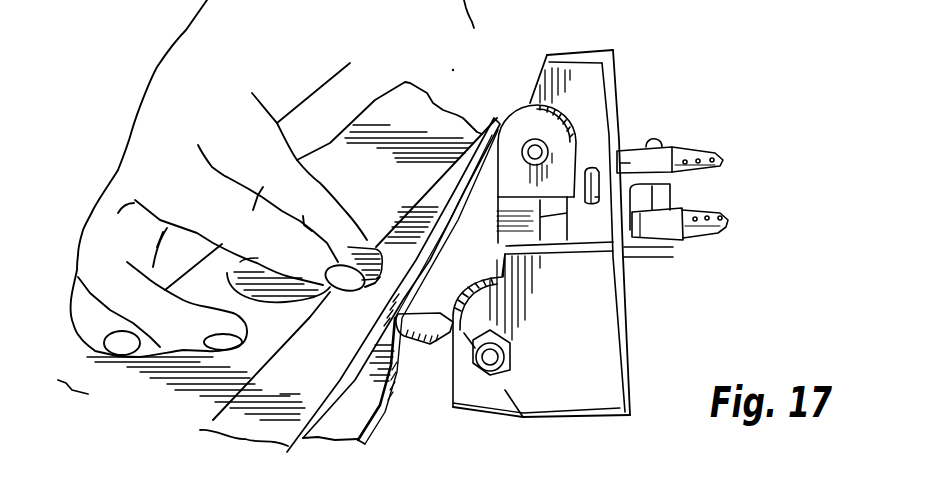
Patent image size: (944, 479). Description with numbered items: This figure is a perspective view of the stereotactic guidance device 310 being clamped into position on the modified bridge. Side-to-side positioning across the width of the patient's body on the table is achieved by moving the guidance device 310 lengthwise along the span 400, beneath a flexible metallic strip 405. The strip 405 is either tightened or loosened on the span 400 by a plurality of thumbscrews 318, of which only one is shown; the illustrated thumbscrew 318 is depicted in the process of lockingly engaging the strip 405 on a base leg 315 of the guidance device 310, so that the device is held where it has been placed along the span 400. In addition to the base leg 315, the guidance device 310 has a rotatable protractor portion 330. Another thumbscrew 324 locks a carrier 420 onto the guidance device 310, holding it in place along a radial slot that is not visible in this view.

The guidance device 310 is at (627, 326).
The base leg 315 is at (437, 325).
The thumbscrew 318 is at (378, 283).
The thumbscrew 324 is at (588, 167).
The rotatable protractor portion 330 is at (579, 400).
The span 400 is at (388, 420).
The flexible metallic strip 405 is at (215, 415).
The carrier 420 is at (662, 252).